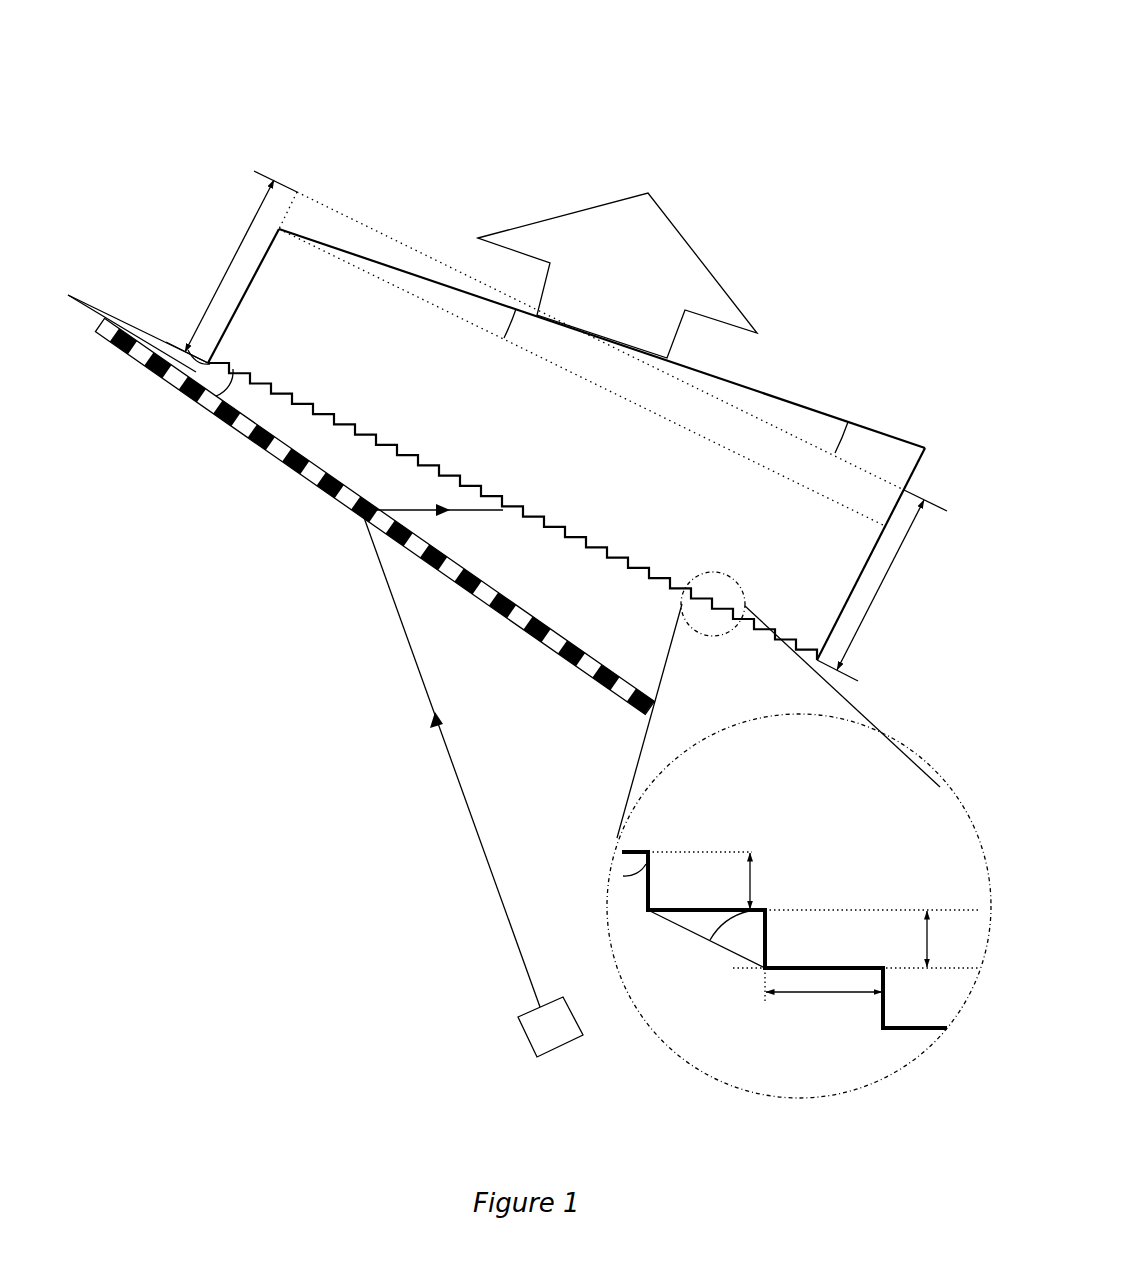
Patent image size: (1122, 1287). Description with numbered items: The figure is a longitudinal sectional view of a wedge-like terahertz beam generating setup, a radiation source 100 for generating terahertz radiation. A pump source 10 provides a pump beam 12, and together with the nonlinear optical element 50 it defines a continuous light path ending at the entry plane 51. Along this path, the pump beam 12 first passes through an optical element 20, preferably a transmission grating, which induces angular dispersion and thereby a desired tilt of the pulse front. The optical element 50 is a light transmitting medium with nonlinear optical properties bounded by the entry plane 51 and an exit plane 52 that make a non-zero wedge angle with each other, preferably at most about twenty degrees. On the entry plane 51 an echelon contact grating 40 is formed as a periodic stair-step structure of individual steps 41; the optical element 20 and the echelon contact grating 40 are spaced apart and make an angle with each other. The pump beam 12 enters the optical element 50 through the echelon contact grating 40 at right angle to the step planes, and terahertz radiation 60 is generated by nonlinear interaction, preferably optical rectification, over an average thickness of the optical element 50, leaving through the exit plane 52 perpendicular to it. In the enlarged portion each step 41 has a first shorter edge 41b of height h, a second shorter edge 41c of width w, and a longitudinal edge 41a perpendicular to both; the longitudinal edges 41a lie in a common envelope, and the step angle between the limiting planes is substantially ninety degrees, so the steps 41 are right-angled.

The radiation source 100 is at (842, 104).
The pump source 10 is at (540, 1032).
The pump beam 12 is at (452, 775).
The optical element 20 is at (281, 453).
The echelon contact grating 40 is at (597, 552).
The optical element 50 is at (798, 418).
The entry plane 51 is at (188, 348).
The exit plane 52 is at (383, 265).
The terahertz radiation 60 is at (663, 252).
The step 41 is at (679, 892).
The longitudinal edge 41a is at (884, 1030).
The first shorter edge 41b is at (880, 1012).
The second shorter edge 41c is at (910, 1030).